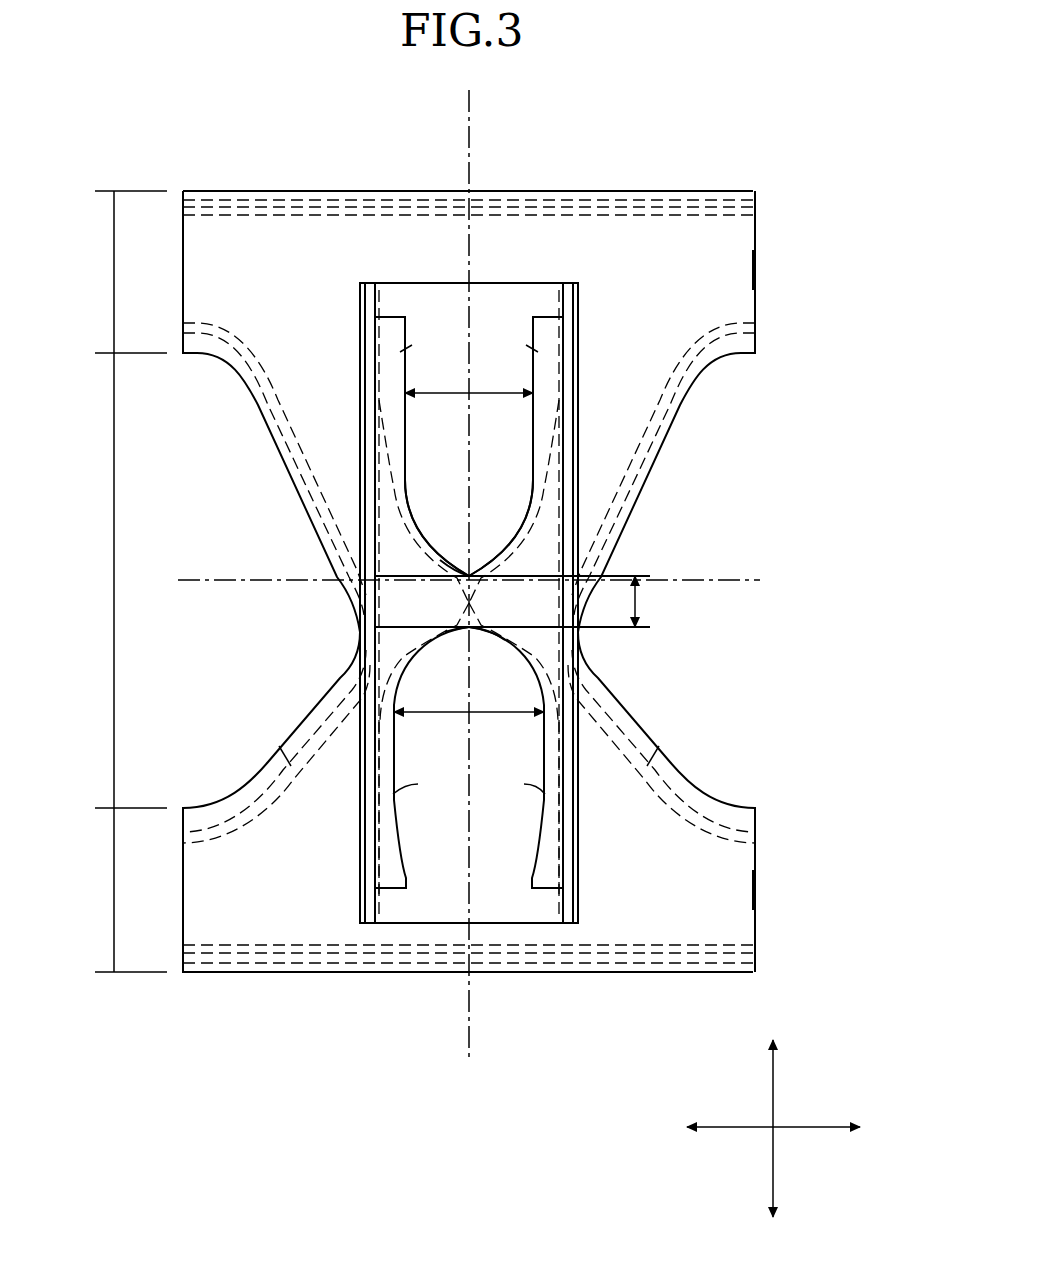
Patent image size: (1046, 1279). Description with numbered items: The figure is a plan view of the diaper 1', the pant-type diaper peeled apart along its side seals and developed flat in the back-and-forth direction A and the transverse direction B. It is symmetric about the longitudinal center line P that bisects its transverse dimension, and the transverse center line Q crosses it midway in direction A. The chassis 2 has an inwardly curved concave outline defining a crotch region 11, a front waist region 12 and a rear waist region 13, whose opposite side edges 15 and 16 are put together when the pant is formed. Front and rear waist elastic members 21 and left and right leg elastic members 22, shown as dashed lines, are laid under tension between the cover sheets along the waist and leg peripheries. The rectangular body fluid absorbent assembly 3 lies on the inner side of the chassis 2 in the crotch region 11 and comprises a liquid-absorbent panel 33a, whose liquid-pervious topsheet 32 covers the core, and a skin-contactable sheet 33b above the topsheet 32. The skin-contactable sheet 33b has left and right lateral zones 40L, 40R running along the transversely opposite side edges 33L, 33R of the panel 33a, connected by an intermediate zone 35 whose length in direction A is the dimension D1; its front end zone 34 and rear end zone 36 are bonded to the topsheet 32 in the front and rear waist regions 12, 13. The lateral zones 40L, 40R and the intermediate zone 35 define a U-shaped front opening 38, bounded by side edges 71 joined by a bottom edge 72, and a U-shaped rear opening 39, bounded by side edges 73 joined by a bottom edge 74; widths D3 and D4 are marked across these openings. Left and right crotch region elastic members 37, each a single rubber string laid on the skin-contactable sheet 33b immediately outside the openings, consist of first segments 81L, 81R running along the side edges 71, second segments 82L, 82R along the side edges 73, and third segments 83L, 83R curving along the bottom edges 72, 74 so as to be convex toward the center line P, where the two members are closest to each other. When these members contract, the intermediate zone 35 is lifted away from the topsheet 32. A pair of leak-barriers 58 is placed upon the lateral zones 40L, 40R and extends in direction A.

The diaper 1' is at (455, 639).
The pant-type chassis 2 is at (216, 170).
The body fluid absorbent assembly 3 is at (588, 270).
The crotch region 11 is at (114, 602).
The front waist region 12 is at (114, 890).
The rear waist region 13 is at (114, 278).
The side edges of front waist region 15 is at (186, 895).
The side edges of rear waist region 16 is at (195, 268).
The waist elastic members 21 is at (601, 208).
The leg elastic members 22 is at (285, 752).
The liquid-pervious topsheet 32 is at (392, 290).
The liquid-absorbent panel 33a is at (440, 280).
The skin-contactable sheet 33b is at (546, 313).
The right side edge of liquid-absorbent panel 33R is at (380, 303).
The left side edge of liquid-absorbent panel 33L is at (560, 303).
The front end zone 34 is at (385, 860).
The intermediate zone 35 is at (520, 638).
The rear end zone 36 is at (395, 343).
The crotch region elastic members 37 is at (372, 428).
The front opening 38 is at (555, 758).
The rear opening 39 is at (535, 413).
The right lateral zone 40R is at (380, 805).
The left lateral zone 40L is at (565, 800).
The leak-barriers 58 is at (395, 487).
The side edges of front opening 71 is at (469, 794).
The bottom edge of front opening 72 is at (465, 631).
The side edges of rear opening 73 is at (470, 345).
The bottom edge of rear opening 74 is at (445, 568).
The first segment of right crotch region elastic member 81R is at (395, 848).
The first segment of left crotch region elastic member 81L is at (590, 730).
The second segment of right crotch region elastic member 82R is at (394, 485).
The second segment of left crotch region elastic member 82L is at (565, 377).
The third segment of right crotch region elastic member 83R is at (452, 618).
The third segment of left crotch region elastic member 83L is at (487, 615).
The dimension of intermediate zone D1 is at (640, 600).
The front opening width D3 is at (452, 716).
The rear opening width D4 is at (440, 396).
The longitudinal center line P is at (470, 108).
The transverse center line Q is at (188, 578).
The back-and-forth direction A is at (773, 1088).
The transverse direction B is at (820, 1127).